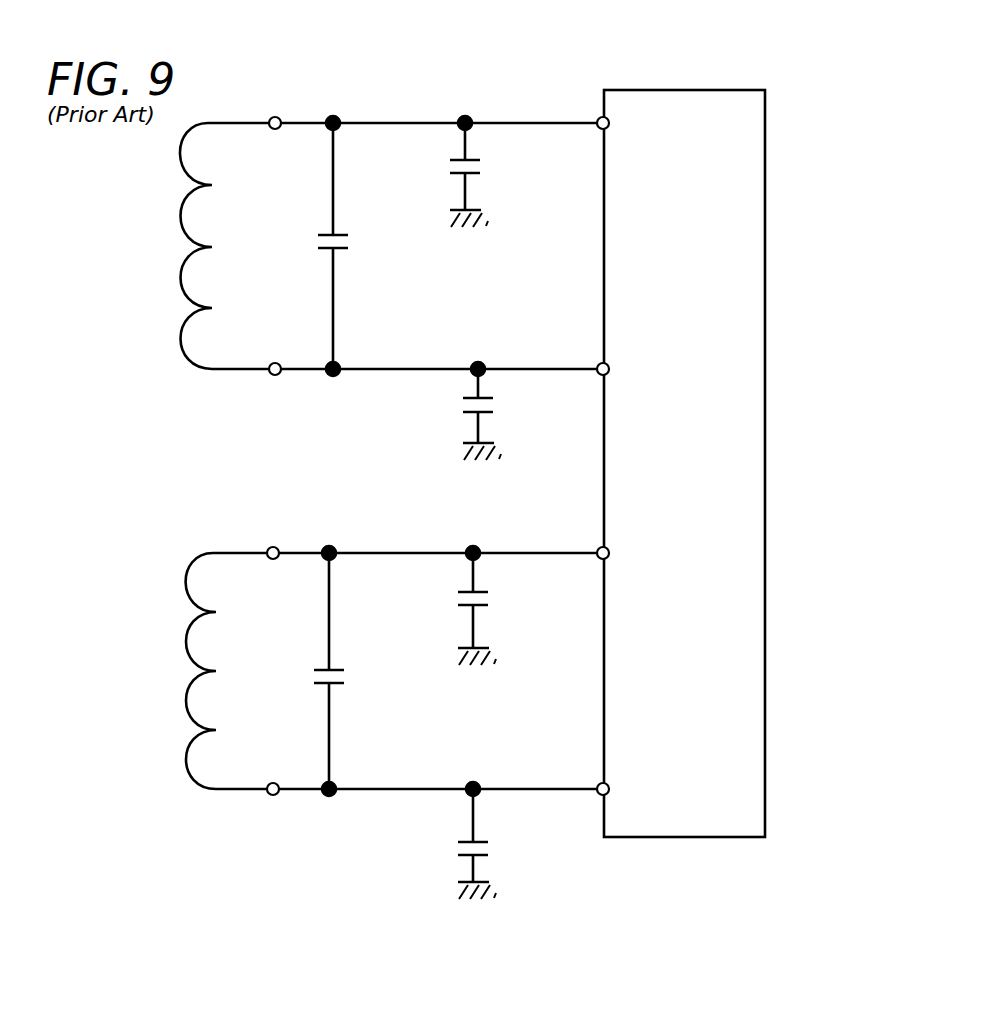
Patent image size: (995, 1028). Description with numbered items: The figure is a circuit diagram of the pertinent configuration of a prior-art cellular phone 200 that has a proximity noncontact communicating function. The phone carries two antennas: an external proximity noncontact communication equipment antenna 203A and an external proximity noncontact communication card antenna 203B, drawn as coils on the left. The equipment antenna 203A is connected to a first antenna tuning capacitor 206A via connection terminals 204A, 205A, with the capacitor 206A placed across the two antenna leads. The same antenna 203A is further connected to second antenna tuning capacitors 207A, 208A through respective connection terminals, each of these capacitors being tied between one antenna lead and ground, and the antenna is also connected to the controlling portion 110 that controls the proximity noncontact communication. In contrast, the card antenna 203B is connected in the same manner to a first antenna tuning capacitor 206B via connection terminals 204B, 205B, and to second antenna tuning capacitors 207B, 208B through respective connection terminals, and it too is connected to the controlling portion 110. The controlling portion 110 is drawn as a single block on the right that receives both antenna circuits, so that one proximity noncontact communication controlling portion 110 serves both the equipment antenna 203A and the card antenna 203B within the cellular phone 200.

The controlling portion 110 is at (667, 90).
The cellular phone 200 is at (777, 101).
The external proximity noncontact communication equipment antenna 203A is at (190, 247).
The external proximity noncontact communication card antenna 203B is at (208, 672).
The connection terminal 204A is at (273, 116).
The connection terminal 204B is at (270, 547).
The connection terminal 205A is at (275, 376).
The connection terminal 205B is at (273, 796).
The first antenna tuning capacitor 206A is at (349, 241).
The first antenna tuning capacitor 206B is at (345, 678).
The second antenna tuning capacitor 207A is at (495, 404).
The second antenna tuning capacitor 207B is at (490, 848).
The second antenna tuning capacitor 208A is at (482, 168).
The second antenna tuning capacitor 208B is at (490, 598).